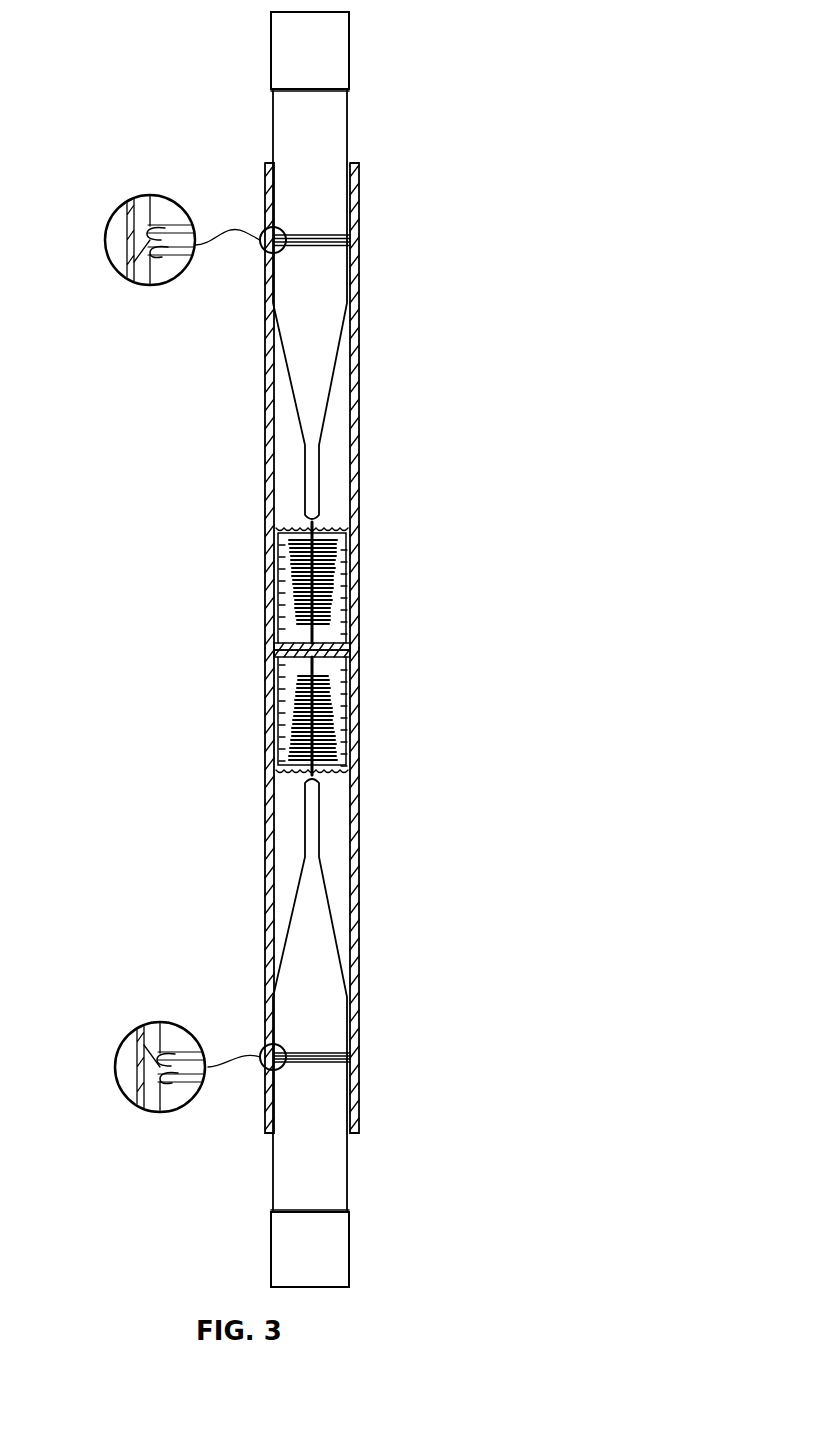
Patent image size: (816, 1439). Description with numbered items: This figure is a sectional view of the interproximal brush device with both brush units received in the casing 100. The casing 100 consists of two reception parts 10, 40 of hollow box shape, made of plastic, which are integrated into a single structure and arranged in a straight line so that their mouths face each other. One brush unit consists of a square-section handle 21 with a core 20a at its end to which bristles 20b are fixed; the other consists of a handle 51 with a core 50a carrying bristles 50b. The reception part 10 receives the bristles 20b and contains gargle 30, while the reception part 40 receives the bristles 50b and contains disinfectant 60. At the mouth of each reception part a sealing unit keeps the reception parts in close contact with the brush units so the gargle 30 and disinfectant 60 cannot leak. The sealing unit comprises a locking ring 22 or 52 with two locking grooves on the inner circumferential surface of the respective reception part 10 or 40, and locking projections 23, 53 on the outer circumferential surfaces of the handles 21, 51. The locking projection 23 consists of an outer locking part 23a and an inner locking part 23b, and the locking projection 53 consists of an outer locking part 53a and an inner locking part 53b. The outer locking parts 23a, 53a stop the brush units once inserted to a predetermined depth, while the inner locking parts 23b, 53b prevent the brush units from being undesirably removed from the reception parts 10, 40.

The casing 100 is at (266, 645).
The reception part 10 is at (358, 268).
The reception part 40 is at (359, 1020).
The handle 21 is at (305, 164).
The locking ring 22 is at (160, 252).
The locking projection 23 is at (314, 238).
The outer locking part 23a is at (147, 232).
The inner locking part 23b is at (152, 255).
The gargle 30 is at (318, 583).
The core 20a is at (348, 641).
The bristles 20b is at (330, 603).
The core 50a is at (348, 660).
The bristles 50b is at (330, 686).
The disinfectant 60 is at (317, 724).
The handle 51 is at (323, 1183).
The locking ring 52 is at (165, 1088).
The locking projection 53 is at (324, 1064).
The outer locking part 53a is at (162, 1110).
The inner locking part 53b is at (155, 1058).